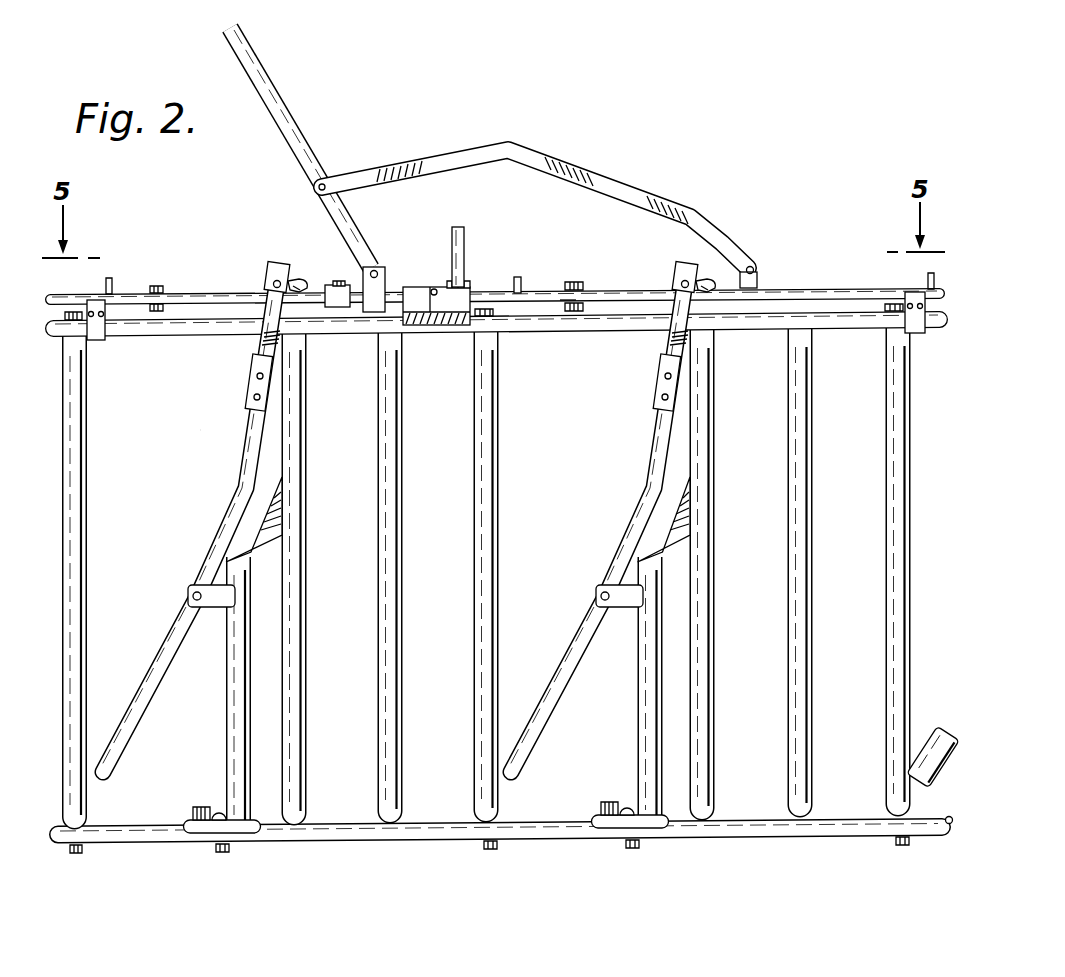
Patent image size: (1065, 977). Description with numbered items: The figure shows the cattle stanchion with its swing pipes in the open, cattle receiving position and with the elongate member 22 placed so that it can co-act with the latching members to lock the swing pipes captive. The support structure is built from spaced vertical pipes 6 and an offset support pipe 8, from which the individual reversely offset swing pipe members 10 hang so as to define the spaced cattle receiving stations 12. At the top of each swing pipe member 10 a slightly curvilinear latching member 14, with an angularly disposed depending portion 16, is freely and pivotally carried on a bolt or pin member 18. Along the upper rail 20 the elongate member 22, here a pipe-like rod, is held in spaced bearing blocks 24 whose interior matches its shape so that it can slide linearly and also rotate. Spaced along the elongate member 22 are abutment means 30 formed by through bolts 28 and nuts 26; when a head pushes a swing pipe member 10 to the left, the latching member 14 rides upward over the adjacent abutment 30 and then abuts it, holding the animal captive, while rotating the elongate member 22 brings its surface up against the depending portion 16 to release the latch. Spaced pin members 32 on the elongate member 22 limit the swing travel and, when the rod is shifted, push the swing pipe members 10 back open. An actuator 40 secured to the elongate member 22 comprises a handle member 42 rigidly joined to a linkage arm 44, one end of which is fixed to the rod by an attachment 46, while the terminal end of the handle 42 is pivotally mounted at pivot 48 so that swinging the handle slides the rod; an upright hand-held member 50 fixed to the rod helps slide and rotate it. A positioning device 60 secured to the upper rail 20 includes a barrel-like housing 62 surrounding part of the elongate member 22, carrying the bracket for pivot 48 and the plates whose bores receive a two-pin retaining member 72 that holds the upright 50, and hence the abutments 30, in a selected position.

The vertical pipes 6 is at (78, 485).
The offset support pipe 8 is at (233, 718).
The swing pipe member 10 is at (222, 520).
The cattle receiving station 12 is at (178, 433).
The latching member 14 is at (298, 291).
The depending portion 16 is at (304, 283).
The bolt or pin member 18 is at (266, 272).
The upper rail 20 is at (233, 330).
The elongate member 22 is at (198, 295).
The bearing block 24 is at (100, 342).
The nut 26 is at (583, 290).
The through bolt 28 is at (567, 300).
The abutment means 30 is at (572, 288).
The pin member 32 is at (522, 278).
The actuator 40 is at (521, 170).
The handle member 42 is at (265, 70).
The linkage arm 44 is at (590, 170).
The attachment 46 is at (760, 270).
The pivot 48 is at (386, 268).
The upright hand-held member 50 is at (465, 232).
The positioning device 60 is at (452, 327).
The barrel-like housing 62 is at (410, 287).
The two-pin retaining member 72 is at (468, 285).